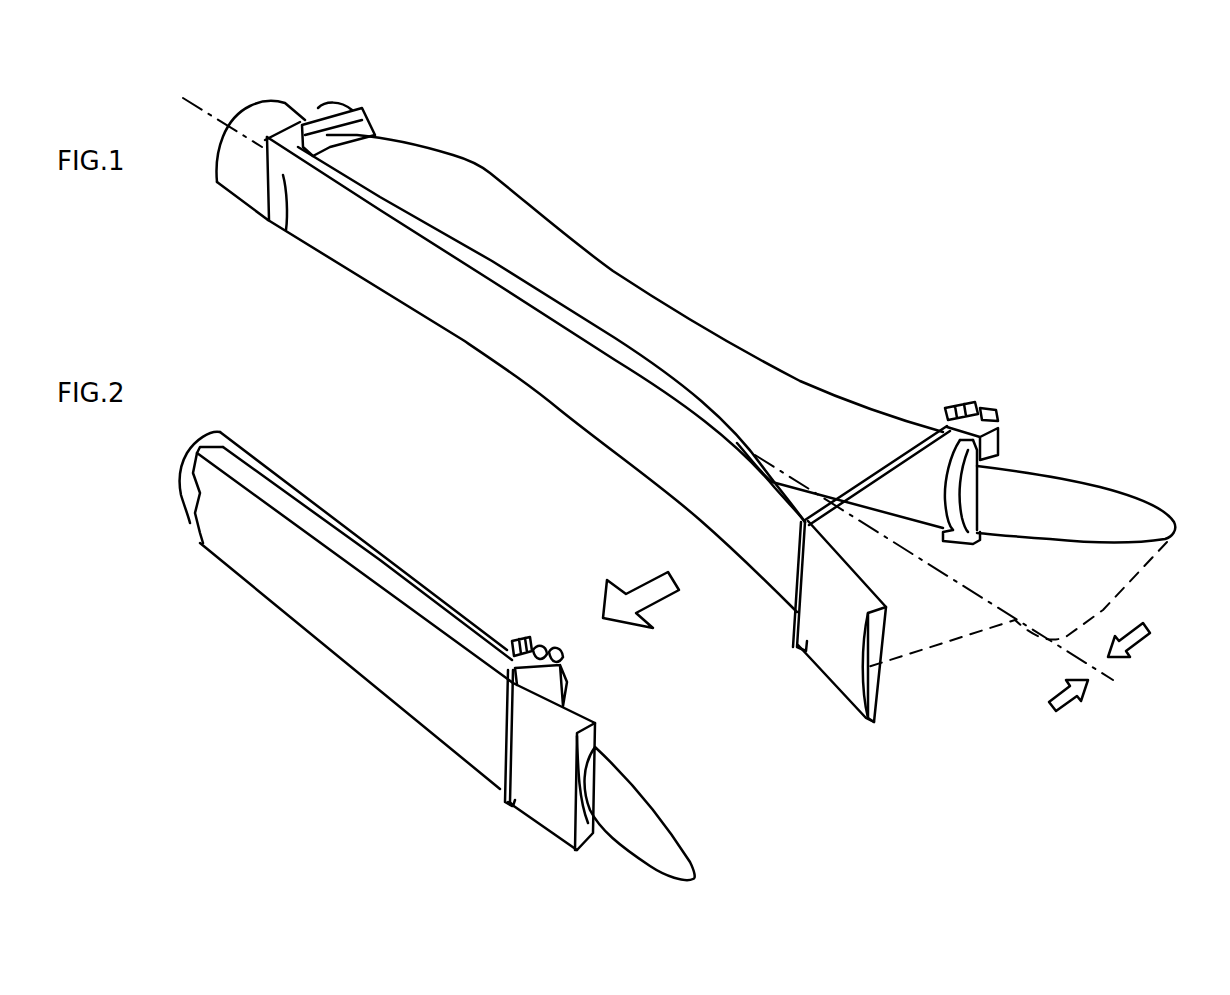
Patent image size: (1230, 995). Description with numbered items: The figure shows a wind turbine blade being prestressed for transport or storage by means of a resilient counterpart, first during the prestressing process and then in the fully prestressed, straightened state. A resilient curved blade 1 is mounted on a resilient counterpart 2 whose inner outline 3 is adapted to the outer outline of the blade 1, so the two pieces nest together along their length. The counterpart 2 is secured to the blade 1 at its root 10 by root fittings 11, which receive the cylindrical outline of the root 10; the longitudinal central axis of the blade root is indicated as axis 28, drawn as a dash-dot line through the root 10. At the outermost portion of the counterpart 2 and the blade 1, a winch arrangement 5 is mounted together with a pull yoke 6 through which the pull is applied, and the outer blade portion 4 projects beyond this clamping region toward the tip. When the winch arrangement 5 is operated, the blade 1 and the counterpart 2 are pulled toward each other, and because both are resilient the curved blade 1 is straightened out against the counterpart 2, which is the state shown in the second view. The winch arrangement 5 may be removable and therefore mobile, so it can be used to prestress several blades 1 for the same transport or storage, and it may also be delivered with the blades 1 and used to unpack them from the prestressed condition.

In FIG. 1, the resilient curved blade 1 is at (483, 200).
In FIG. 2, the resilient curved blade 1 is at (280, 480).
In FIG. 1, the resilient counterpart 2 is at (380, 240).
In FIG. 2, the resilient counterpart 2 is at (290, 573).
In FIG. 1, the inner outline 3 is at (873, 670).
In FIG. 2, the inner outline 3 is at (550, 760).
In FIG. 1, the blade tip 4 is at (1080, 512).
In FIG. 2, the blade tip 4 is at (640, 813).
In FIG. 1, the winch arrangement 5 is at (957, 403).
In FIG. 2, the winch arrangement 5 is at (522, 647).
In FIG. 1, the pull yoke 6 is at (993, 445).
In FIG. 2, the pull yoke 6 is at (557, 647).
In FIG. 1, the root 10 is at (278, 118).
In FIG. 1, the root fittings 11 is at (285, 233).
In FIG. 1, the longitudinal central axis of the blade root 28 is at (178, 102).